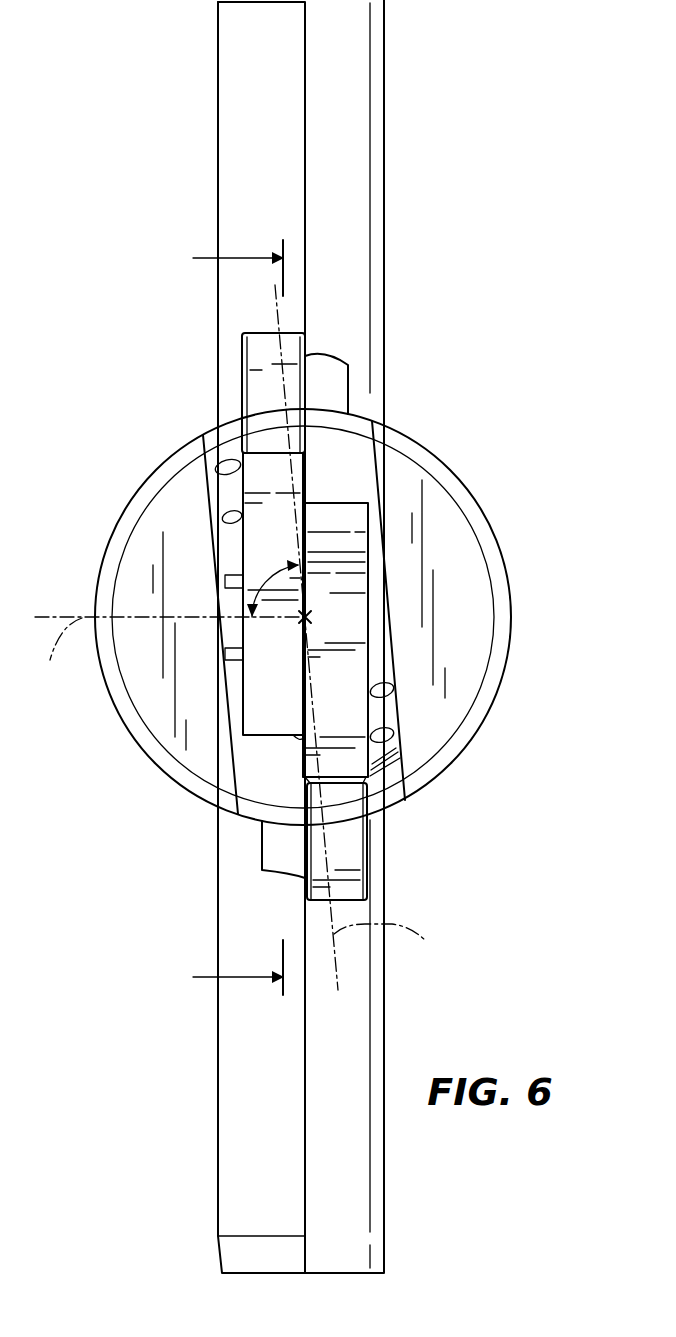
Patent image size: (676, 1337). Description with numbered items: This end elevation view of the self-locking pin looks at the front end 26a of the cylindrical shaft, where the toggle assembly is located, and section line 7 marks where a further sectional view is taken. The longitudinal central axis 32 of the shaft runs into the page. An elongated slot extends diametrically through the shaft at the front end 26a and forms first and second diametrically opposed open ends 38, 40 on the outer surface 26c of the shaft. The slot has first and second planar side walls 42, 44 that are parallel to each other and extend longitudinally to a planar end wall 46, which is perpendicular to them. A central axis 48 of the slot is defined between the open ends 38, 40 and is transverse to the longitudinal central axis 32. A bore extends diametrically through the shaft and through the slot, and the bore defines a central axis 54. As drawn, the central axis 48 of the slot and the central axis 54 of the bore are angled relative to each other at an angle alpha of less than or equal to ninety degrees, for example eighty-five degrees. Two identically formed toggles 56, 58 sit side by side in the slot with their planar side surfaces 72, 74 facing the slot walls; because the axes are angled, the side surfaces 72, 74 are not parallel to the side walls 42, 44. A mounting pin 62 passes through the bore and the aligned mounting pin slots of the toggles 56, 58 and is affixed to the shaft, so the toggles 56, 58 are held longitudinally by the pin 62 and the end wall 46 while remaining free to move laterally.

The section line 7- 7 is at (228, 617).
The front end 26a is at (453, 641).
The outer surface 26c is at (461, 763).
The longitudinal central axis 32 is at (305, 617).
The first open end 38 is at (357, 410).
The second open end 40 is at (397, 813).
The first planar side wall 42 is at (248, 757).
The second planar side wall 44 is at (385, 700).
The planar end wall 46 is at (290, 546).
The central axis of the slot 48 is at (368, 637).
The central axis of the bore 54 is at (163, 652).
The toggle 56 is at (242, 393).
The toggle 58 is at (370, 889).
The mounting pin 62 is at (228, 577).
The side surface 72 is at (340, 472).
The side surface 74 is at (372, 612).